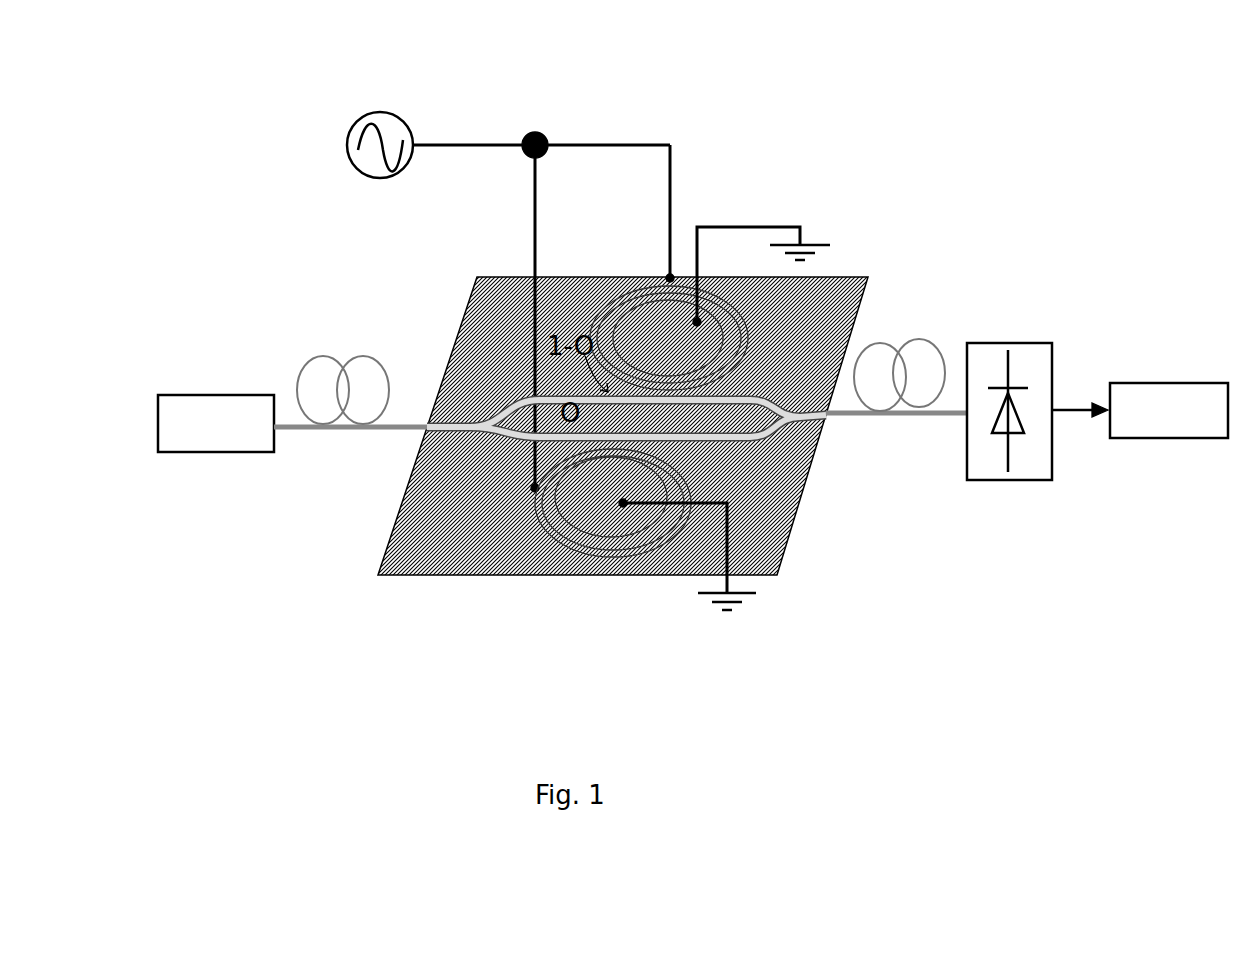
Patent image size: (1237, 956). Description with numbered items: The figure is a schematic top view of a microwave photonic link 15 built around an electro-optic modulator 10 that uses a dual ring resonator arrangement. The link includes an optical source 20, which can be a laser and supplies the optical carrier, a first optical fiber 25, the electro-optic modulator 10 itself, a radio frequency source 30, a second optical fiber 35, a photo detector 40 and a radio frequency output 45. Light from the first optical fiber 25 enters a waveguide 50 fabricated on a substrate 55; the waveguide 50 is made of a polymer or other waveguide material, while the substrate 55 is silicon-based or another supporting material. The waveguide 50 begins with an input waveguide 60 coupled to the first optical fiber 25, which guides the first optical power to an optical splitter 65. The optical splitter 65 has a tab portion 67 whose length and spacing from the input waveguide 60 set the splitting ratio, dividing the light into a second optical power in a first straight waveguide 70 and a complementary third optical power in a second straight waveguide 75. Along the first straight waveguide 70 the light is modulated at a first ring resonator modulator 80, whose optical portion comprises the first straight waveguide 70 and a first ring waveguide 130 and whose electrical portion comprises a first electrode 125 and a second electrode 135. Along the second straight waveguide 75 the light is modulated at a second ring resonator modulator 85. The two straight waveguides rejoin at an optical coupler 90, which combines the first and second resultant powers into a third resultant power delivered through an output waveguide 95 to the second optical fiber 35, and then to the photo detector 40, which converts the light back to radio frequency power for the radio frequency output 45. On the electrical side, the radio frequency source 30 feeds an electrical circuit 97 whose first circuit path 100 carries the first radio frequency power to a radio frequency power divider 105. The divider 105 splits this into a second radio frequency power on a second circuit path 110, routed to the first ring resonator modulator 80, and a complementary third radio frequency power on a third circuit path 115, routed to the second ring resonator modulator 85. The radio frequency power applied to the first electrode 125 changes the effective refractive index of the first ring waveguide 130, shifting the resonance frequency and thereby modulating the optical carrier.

The electro-optic modulator 10 is at (777, 575).
The microwave photonic link 15 is at (370, 687).
The optical source 20 is at (222, 453).
The first optical fiber 25 is at (358, 352).
The radio frequency source 30 is at (393, 112).
The second optical fiber 35 is at (885, 413).
The photo detector 40 is at (1022, 343).
The radio frequency output 45 is at (1143, 383).
The waveguide 50 is at (818, 479).
The substrate 55 is at (860, 283).
The input waveguide 60 is at (413, 450).
The optical splitter 65 is at (477, 453).
The tab portion 67 is at (453, 340).
The first straight waveguide 70 is at (645, 419).
The second straight waveguide 75 is at (620, 355).
The first ring resonator modulator 80 is at (537, 578).
The second ring resonator modulator 85 is at (603, 273).
The optical coupler 90 is at (721, 301).
The output waveguide 95 is at (847, 370).
The electrical circuit 97 is at (677, 167).
The first circuit path 100 is at (485, 140).
The radio frequency power divider 105 is at (540, 138).
The second circuit path 110 is at (532, 252).
The third circuit path 115 is at (657, 140).
The first electrode 125 is at (608, 577).
The first ring waveguide 130 is at (780, 496).
The second electrode 135 is at (428, 577).